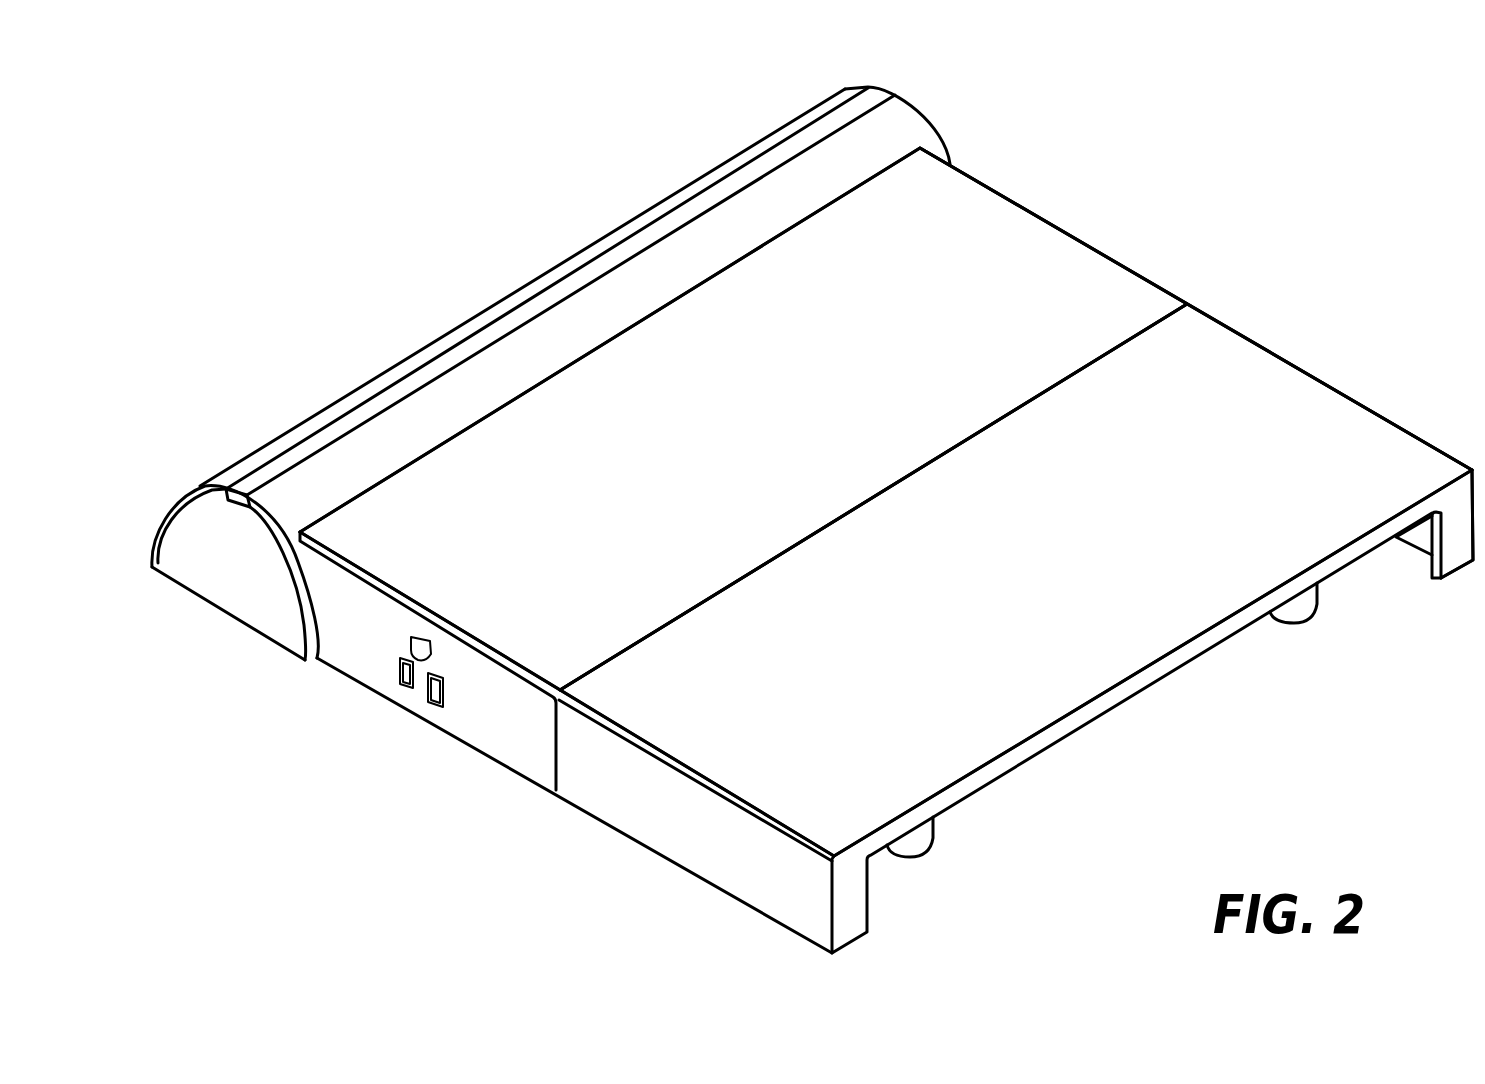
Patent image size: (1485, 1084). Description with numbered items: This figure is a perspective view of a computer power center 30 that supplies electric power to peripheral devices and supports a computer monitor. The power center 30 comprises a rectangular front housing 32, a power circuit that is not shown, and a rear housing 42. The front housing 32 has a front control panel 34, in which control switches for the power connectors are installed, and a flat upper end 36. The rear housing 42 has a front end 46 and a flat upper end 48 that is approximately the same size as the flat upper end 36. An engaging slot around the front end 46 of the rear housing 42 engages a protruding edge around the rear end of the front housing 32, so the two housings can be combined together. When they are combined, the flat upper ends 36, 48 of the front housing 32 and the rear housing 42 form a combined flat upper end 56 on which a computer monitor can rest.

The computer power center 30 is at (343, 252).
The front housing 32 is at (998, 217).
The front control panel 34 is at (633, 230).
The flat upper end 36 is at (787, 422).
The rear housing 42 is at (1292, 398).
The front end 46 is at (655, 633).
The flat upper end 48 is at (1060, 600).
The combined flat upper end 56 is at (1103, 253).